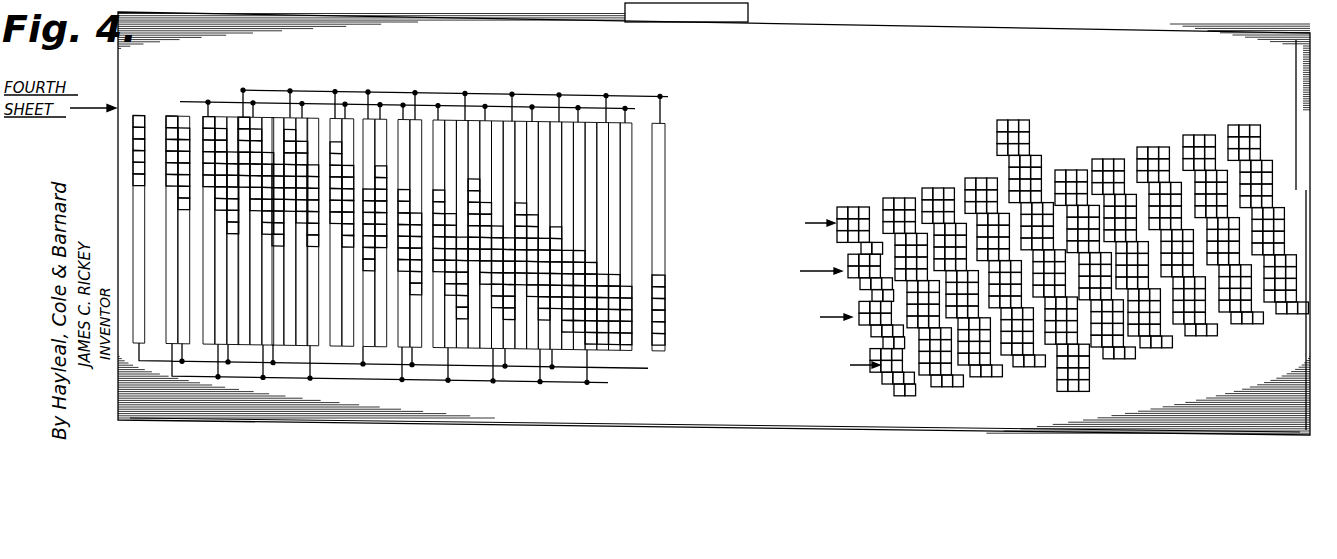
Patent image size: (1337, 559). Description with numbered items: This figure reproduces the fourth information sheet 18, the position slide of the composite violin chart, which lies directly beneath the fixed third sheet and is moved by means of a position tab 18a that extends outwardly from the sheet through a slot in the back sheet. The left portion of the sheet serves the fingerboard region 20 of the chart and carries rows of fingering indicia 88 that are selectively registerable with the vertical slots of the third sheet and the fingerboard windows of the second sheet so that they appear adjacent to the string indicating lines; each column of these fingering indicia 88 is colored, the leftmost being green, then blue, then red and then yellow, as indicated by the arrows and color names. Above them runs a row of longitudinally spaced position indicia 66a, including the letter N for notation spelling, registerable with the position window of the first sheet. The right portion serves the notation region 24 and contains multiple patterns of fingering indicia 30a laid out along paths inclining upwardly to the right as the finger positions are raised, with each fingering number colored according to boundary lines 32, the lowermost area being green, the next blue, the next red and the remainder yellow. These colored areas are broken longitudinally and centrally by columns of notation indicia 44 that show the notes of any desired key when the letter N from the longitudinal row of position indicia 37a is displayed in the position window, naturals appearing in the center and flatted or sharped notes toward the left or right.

The fourth information sheet 18 is at (1304, 36).
The position tab 18a is at (748, 13).
The fingerboard region 20 is at (433, 59).
The notation region 24 is at (1112, 85).
The fingering indicia 30a is at (1308, 200).
The boundary lines 32 is at (1118, 150).
The position indicia 37a is at (1200, 100).
The notation indicia 44 is at (1092, 392).
The position indicia 66a is at (715, 76).
The fingering indicia 88 is at (660, 272).